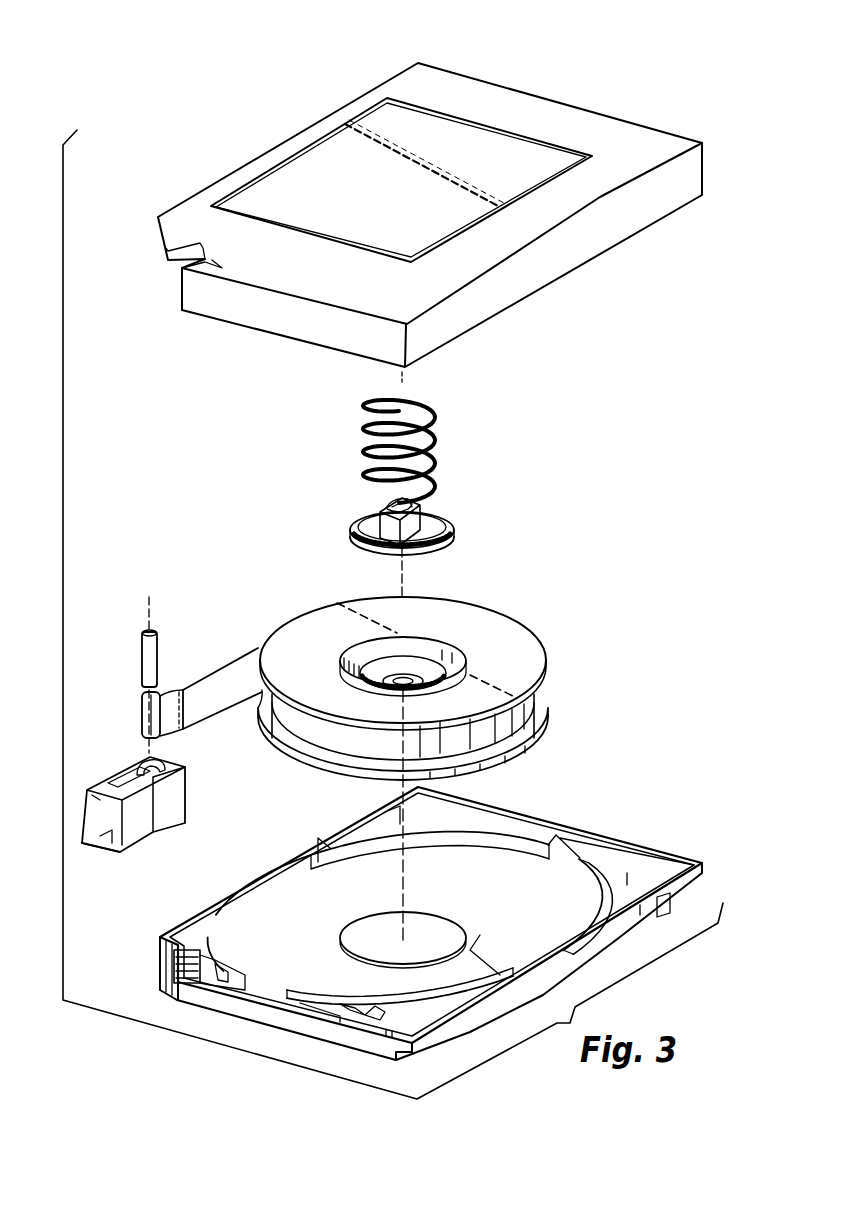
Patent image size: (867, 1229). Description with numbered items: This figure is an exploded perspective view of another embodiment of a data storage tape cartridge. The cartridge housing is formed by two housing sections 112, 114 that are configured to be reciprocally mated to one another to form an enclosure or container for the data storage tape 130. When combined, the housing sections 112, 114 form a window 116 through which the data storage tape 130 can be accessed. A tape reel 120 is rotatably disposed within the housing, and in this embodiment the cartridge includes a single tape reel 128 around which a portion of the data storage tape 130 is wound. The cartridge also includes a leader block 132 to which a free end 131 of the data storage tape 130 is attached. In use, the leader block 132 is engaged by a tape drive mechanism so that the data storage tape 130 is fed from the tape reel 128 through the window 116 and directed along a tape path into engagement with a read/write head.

The housing section 112 is at (519, 105).
The housing section 114 is at (625, 845).
The window 116 is at (170, 975).
The tape reel 120 is at (532, 580).
The single tape reel 128 is at (525, 638).
The data storage tape 130 is at (232, 683).
The free end 131 is at (158, 735).
The leader block 132 is at (186, 818).